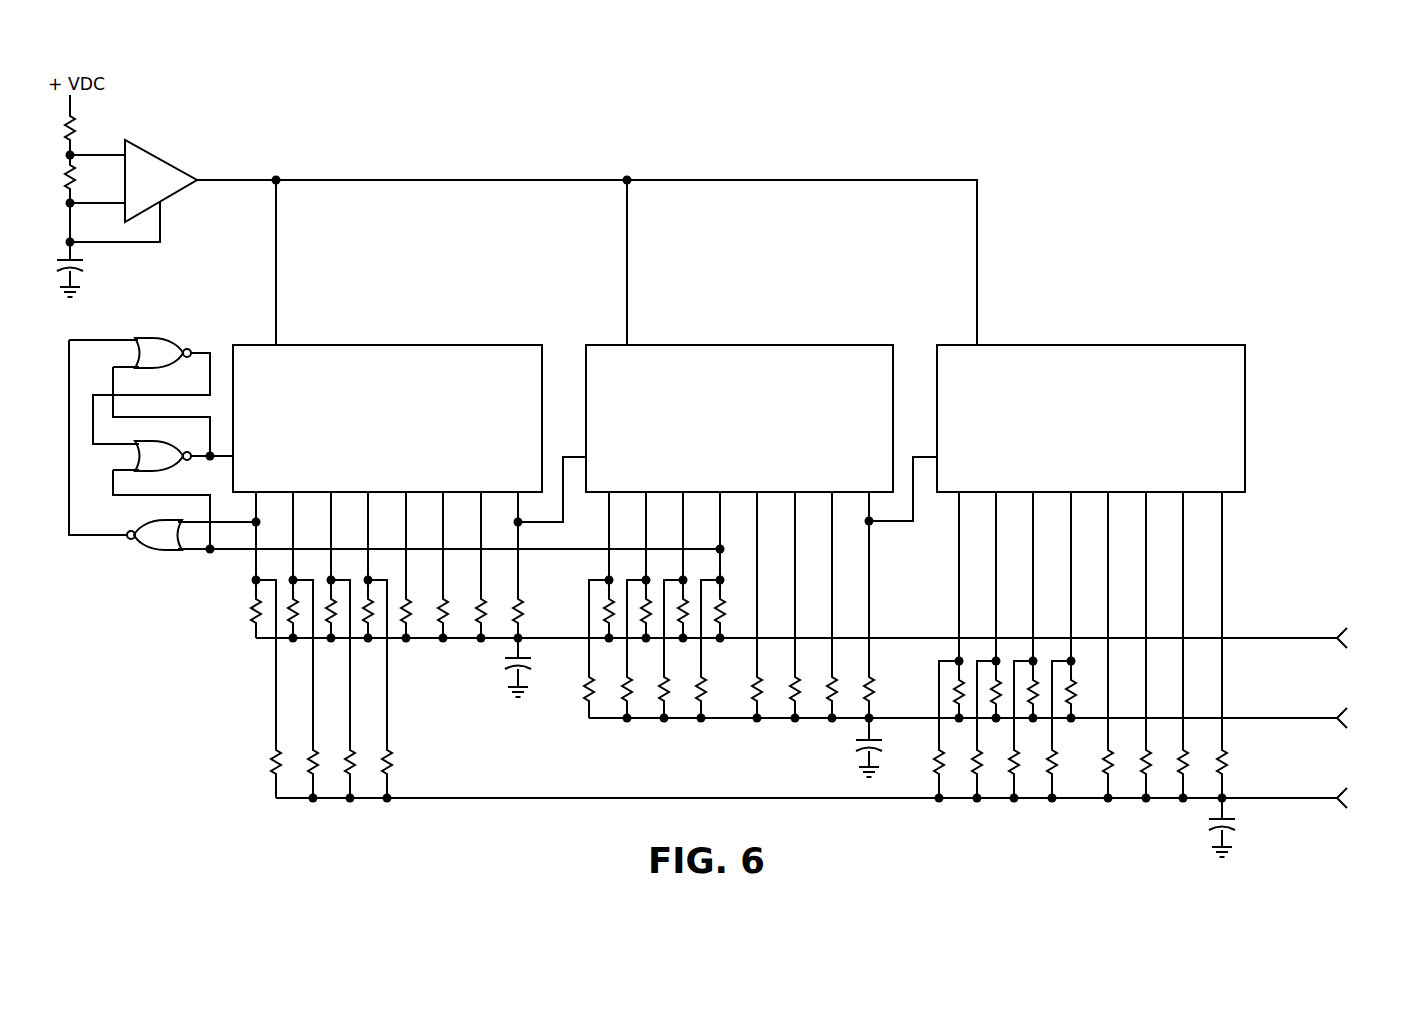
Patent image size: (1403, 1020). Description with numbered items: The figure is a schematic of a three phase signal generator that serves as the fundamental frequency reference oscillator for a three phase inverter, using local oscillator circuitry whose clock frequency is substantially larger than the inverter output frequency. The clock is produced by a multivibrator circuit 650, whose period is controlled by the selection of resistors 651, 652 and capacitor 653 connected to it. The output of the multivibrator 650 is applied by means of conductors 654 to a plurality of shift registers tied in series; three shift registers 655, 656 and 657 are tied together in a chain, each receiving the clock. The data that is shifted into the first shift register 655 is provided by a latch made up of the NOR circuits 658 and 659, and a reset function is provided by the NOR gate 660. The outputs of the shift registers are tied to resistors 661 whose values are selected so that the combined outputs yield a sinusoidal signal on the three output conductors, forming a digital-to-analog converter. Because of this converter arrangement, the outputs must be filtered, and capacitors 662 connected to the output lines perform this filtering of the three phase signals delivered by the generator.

The multivibrator circuit 650 is at (166, 160).
The resistor 651 is at (84, 127).
The resistor 652 is at (76, 186).
The capacitor 653 is at (84, 266).
The conductors 654 is at (238, 178).
The shift register 655 is at (380, 345).
The shift register 656 is at (732, 345).
The shift register 657 is at (1082, 345).
The NOR circuit 658 is at (166, 337).
The NOR circuit 659 is at (172, 472).
The NOR gate 660 is at (154, 551).
The resistors 661 is at (250, 604).
The capacitors 662 is at (503, 662).